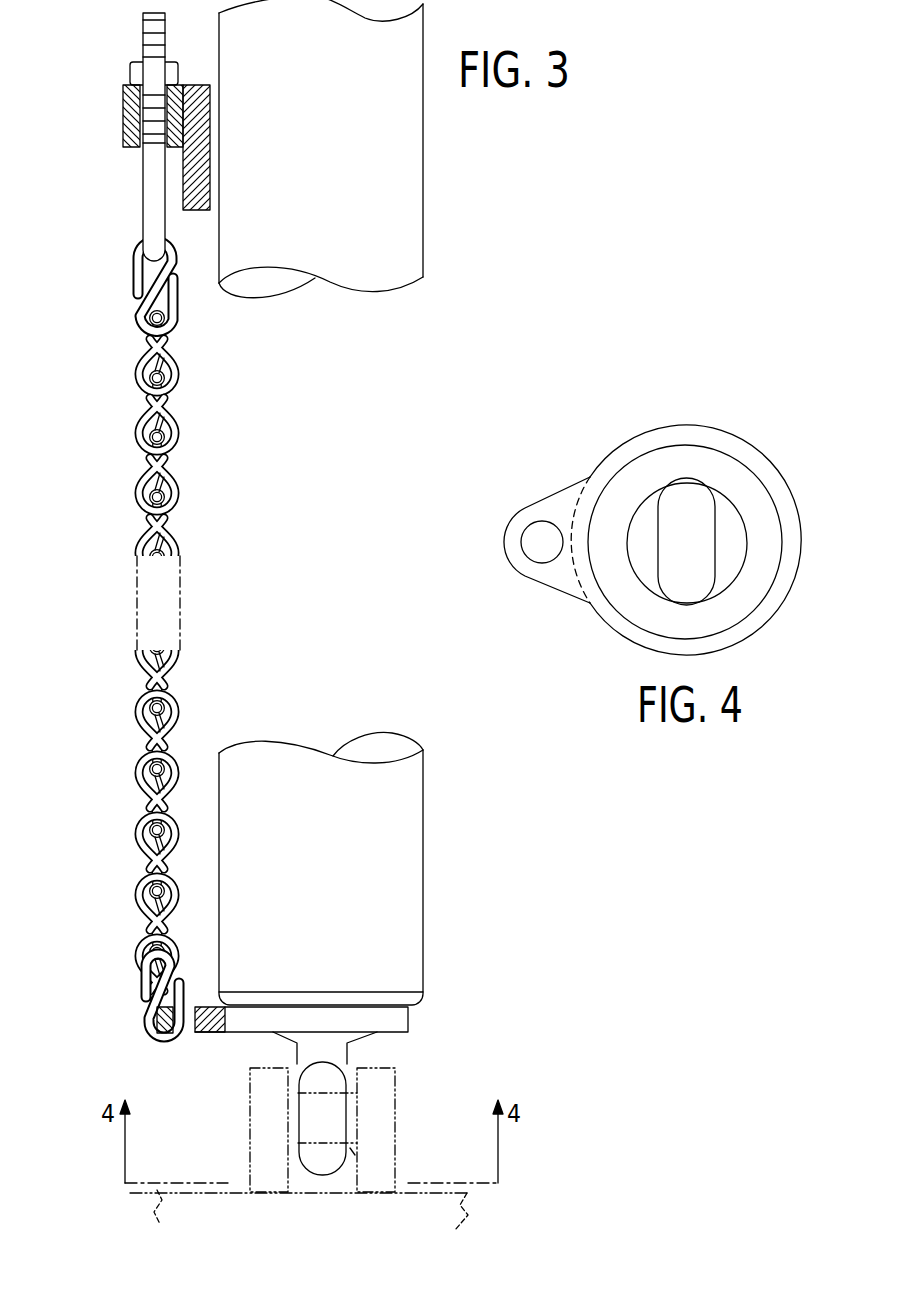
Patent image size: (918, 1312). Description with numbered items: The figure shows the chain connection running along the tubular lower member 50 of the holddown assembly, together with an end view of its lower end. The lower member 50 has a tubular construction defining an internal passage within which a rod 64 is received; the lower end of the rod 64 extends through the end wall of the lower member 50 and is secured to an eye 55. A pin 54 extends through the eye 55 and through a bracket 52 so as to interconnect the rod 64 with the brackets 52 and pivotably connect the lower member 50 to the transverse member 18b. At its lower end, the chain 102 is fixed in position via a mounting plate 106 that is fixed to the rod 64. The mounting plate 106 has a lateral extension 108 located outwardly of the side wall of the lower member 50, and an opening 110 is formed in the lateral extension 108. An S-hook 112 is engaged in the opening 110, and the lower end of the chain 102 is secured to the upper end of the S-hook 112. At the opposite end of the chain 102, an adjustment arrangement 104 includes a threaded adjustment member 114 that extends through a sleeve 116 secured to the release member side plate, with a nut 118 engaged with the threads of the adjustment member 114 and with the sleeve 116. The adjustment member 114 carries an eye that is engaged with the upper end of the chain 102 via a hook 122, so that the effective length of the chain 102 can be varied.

In FIG. 3, the lower member 50 is at (430, 235).
In FIG. 4, the lower member 50 is at (754, 443).
In FIG. 3, the bracket 52 is at (395, 1088).
In FIG. 3, the pin 54 is at (355, 1155).
In FIG. 3, the eye 55 is at (348, 1115).
In FIG. 4, the eye 55 is at (717, 540).
In FIG. 3, the rod 64 is at (347, 1050).
In FIG. 3, the transverse member 18b is at (470, 1203).
In FIG. 3, the chain 102 is at (143, 507).
In FIG. 3, the adjustment arrangement 104 is at (90, 92).
In FIG. 3, the mounting plate 106 is at (232, 1032).
In FIG. 4, the mounting plate 106 is at (628, 620).
In FIG. 3, the lateral extension 108 is at (203, 997).
In FIG. 4, the lateral extension 108 is at (563, 492).
In FIG. 3, the opening 110 is at (187, 1027).
In FIG. 4, the opening 110 is at (535, 555).
In FIG. 3, the S-hook 112 is at (137, 983).
In FIG. 3, the threaded adjustment member 114 is at (143, 198).
In FIG. 3, the sleeve 116 is at (123, 113).
In FIG. 3, the nut 118 is at (138, 65).
In FIG. 3, the hook 122 is at (133, 273).